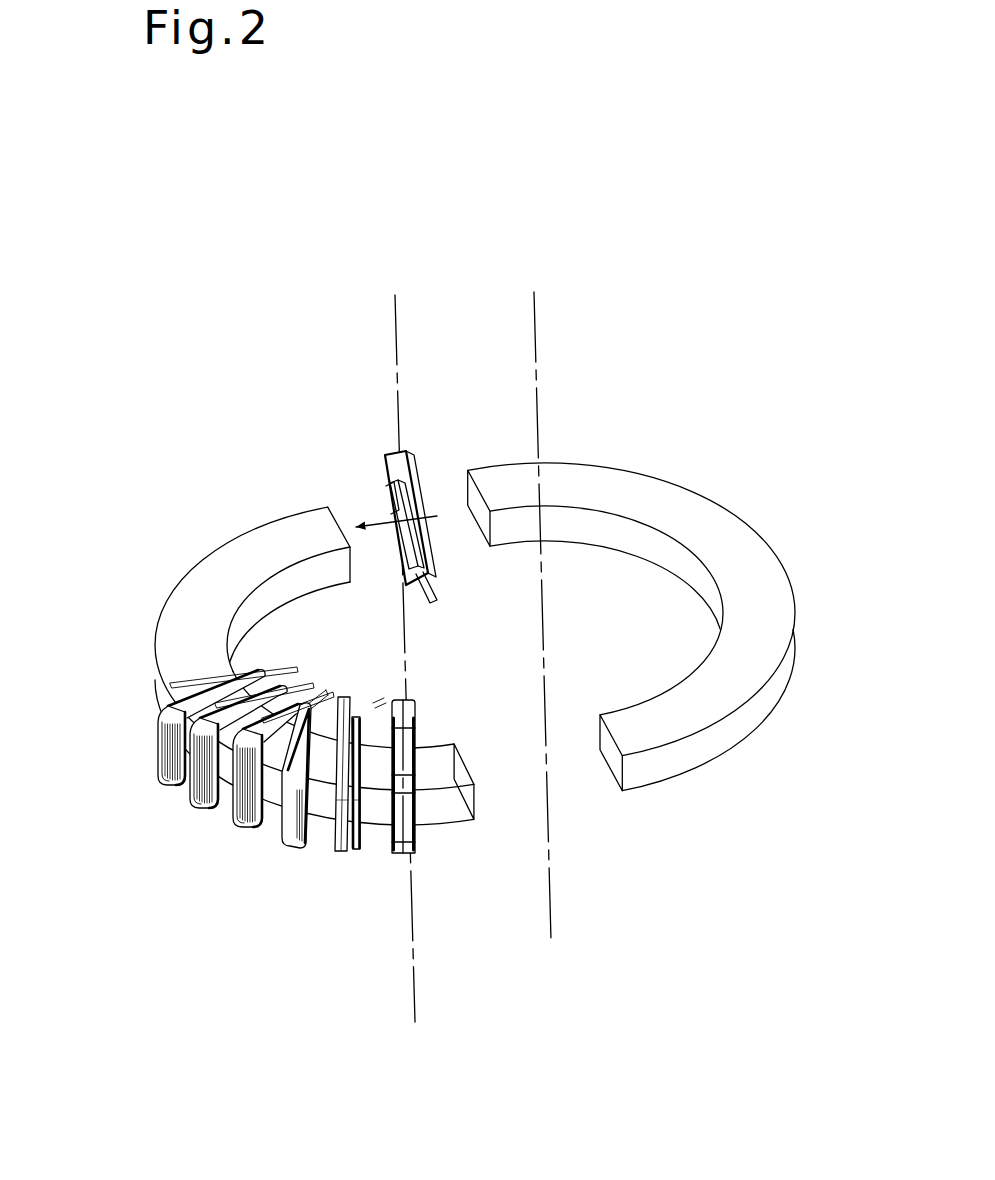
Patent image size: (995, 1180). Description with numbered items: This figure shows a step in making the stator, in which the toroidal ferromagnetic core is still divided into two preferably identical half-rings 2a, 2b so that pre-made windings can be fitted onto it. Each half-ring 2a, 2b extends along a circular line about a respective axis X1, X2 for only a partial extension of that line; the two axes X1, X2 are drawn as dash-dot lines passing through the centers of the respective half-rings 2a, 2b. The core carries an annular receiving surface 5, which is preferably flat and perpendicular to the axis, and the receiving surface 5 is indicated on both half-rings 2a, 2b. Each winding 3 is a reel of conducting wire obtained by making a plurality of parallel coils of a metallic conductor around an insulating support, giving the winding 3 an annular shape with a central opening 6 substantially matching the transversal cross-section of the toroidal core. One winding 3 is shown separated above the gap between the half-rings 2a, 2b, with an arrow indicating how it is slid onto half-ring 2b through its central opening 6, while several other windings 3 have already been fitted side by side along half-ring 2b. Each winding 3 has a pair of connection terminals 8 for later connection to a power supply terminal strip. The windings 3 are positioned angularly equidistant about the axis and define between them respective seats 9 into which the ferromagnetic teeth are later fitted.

The half-ring 2a is at (457, 561).
The half-ring 2b is at (227, 539).
The winding 3 is at (414, 435).
The receiving surface 5 is at (597, 485).
The central opening 6 is at (386, 500).
The connection terminals 8 is at (310, 688).
The seat 9 is at (380, 842).
The axis X1 is at (550, 905).
The axis X2 is at (413, 1000).